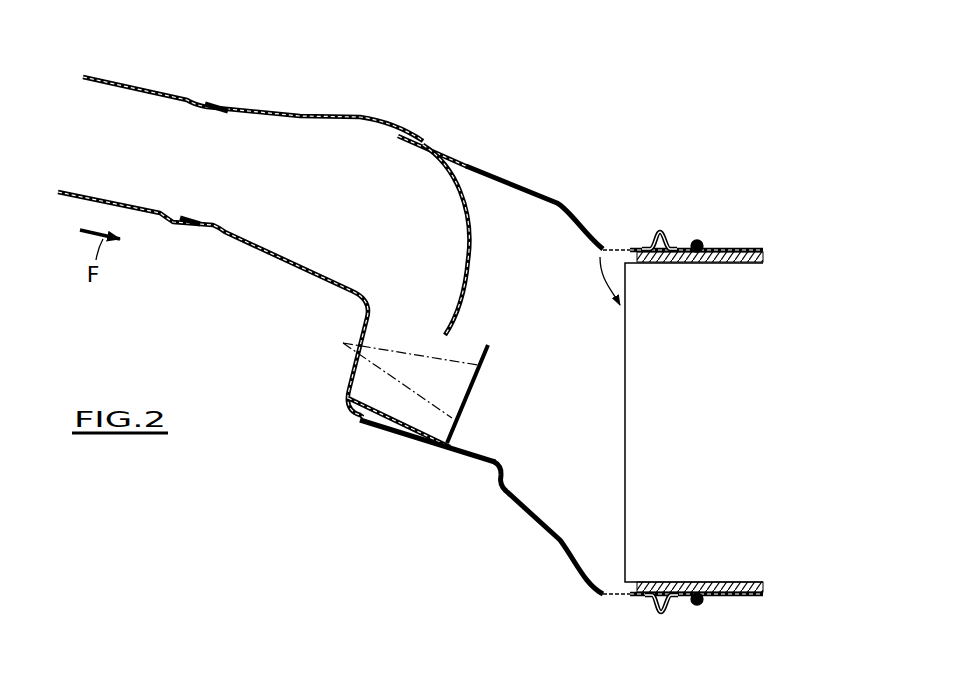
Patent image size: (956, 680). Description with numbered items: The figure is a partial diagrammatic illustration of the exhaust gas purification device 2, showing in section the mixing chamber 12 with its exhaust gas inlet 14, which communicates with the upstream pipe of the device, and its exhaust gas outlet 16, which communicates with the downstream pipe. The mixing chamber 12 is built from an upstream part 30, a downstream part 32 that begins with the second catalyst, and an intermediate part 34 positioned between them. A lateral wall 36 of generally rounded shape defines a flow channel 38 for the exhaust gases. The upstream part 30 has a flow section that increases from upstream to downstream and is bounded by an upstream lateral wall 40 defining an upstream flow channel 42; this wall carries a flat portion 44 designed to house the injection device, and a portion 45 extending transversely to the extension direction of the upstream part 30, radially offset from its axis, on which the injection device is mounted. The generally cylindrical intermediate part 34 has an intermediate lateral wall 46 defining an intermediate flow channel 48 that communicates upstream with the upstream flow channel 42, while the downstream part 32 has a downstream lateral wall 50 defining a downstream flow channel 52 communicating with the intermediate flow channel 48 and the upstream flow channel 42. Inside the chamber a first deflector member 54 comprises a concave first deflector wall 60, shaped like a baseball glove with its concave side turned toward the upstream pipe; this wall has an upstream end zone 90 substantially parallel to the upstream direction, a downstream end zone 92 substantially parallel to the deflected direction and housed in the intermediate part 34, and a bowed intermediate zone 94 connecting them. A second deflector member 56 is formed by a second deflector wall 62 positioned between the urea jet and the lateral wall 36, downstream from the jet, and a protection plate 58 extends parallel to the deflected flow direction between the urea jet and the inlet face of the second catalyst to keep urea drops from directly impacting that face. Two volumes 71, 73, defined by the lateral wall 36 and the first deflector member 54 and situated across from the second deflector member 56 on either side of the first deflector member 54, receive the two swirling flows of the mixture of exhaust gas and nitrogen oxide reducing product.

The purification device 2 is at (653, 133).
The mixing chamber 12 is at (455, 140).
The exhaust gas inlet 14 is at (73, 117).
The exhaust gas outlet 16 is at (632, 250).
The upstream part 30 is at (288, 100).
The downstream part 32 is at (607, 234).
The intermediate part 34 is at (553, 175).
The lateral wall 36 is at (313, 283).
The flow channel 38 is at (352, 163).
The upstream lateral wall 40 is at (233, 110).
The upstream flow channel 42 is at (257, 153).
The flat portion 44 is at (350, 292).
The portion extending transversely 45 is at (336, 380).
The intermediate lateral wall 46 is at (543, 235).
The intermediate flow channel 48 is at (555, 200).
The downstream lateral wall 50 is at (502, 470).
The downstream flow channel 52 is at (531, 452).
The first deflector member 54 is at (452, 193).
The second deflector member 56 is at (383, 422).
The protection plate 58 is at (468, 411).
The first deflector wall 60 is at (467, 188).
The second deflector wall 62 is at (423, 438).
The volume 71 is at (483, 200).
The volume 73 is at (483, 200).
The upstream end zone 90 is at (405, 138).
The downstream end zone 92 is at (447, 328).
The bowed intermediate zone 94 is at (468, 250).